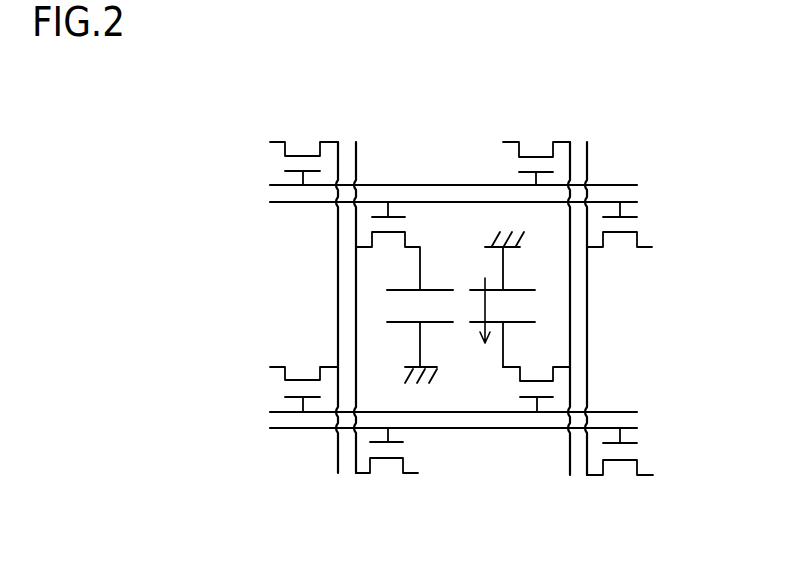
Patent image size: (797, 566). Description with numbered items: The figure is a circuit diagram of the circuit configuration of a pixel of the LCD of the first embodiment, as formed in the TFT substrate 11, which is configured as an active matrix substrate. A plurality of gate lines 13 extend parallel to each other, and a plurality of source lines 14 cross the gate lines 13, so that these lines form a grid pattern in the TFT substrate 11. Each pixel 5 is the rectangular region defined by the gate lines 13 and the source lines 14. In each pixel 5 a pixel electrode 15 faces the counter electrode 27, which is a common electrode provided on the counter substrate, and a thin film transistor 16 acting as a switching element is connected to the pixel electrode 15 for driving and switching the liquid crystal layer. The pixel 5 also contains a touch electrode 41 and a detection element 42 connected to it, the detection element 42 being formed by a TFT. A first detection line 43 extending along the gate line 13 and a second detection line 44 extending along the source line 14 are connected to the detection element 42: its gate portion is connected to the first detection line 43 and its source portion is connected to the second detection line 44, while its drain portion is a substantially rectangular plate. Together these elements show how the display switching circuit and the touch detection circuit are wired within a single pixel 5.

The TFT substrate 11 is at (223, 116).
The detection element 42 is at (294, 120).
The second detection line 44 is at (338, 142).
The source line 14 is at (356, 147).
The first detection line 43 is at (277, 185).
The gate line 13 is at (277, 201).
The thin film transistor 16 is at (424, 228).
The pixel 5 is at (455, 213).
The pixel electrode 15 is at (428, 289).
The counter electrode 27 is at (513, 289).
The touch electrode 41 is at (513, 323).